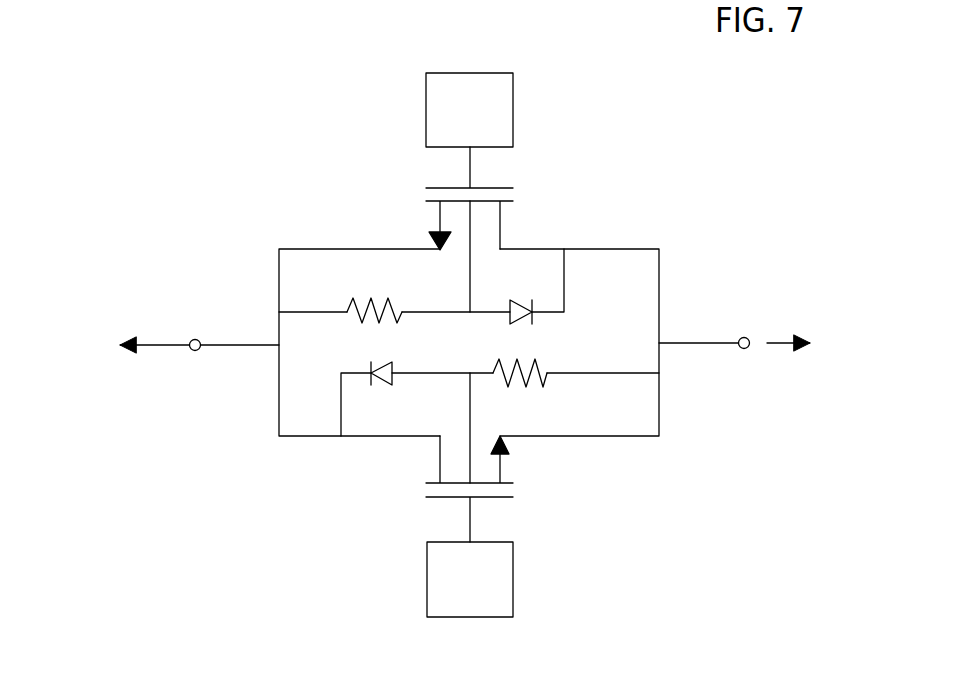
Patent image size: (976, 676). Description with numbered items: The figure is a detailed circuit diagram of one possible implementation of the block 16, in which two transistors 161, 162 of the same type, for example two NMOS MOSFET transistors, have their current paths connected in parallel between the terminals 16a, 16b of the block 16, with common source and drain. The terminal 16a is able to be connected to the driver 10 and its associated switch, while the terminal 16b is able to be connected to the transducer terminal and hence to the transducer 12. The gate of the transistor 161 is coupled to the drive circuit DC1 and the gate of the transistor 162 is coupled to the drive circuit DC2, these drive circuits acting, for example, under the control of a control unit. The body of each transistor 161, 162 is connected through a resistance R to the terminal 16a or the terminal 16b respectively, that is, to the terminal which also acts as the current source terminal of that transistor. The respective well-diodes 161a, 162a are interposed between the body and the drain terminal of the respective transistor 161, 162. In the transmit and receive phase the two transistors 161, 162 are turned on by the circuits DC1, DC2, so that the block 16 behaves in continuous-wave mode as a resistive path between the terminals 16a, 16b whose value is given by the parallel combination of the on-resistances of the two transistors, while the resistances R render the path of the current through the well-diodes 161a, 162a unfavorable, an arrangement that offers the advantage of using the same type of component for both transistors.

The block 16 is at (469, 349).
The terminal 16a is at (196, 334).
The terminal 16b is at (750, 333).
The transistor 161 is at (527, 193).
The transistor 162 is at (522, 508).
The well-diode 161a is at (543, 283).
The well-diode 162a is at (394, 378).
The resistance R is at (376, 299).
The drive circuit DC1 is at (437, 110).
The drive circuit DC2 is at (437, 593).
The driver 10 is at (109, 345).
The transducer 12 is at (851, 345).